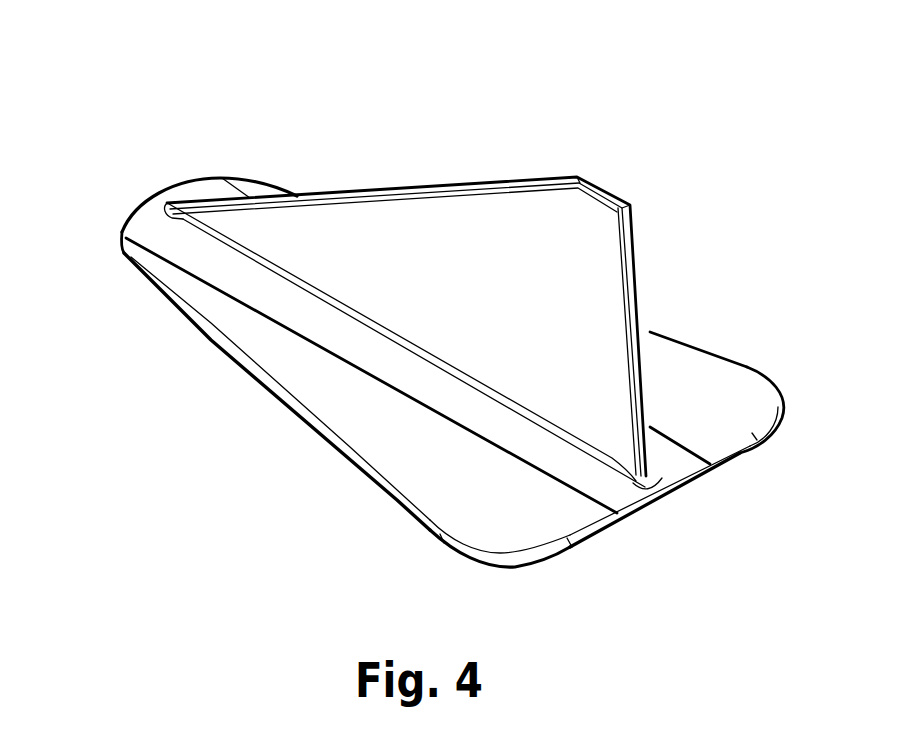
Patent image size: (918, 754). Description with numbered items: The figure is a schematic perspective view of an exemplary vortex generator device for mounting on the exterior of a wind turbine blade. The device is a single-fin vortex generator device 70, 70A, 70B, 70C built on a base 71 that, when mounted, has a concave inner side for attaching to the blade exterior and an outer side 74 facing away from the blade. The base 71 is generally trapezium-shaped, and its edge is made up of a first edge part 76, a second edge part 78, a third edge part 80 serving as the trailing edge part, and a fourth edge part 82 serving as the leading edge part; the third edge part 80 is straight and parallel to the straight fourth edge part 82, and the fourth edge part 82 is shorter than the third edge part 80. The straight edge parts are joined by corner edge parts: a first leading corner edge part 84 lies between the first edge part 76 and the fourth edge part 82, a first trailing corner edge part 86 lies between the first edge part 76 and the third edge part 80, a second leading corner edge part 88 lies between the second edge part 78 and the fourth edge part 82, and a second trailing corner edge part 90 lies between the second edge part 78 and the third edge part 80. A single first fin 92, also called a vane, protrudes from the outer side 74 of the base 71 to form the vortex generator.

The single-fin vortex generator device 70 is at (394, 271).
The single-fin vortex generator device 70A is at (394, 271).
The single-fin vortex generator device 70B is at (394, 271).
The single-fin vortex generator device 70C is at (445, 143).
The base 71 is at (682, 372).
The outer side 74 is at (397, 449).
The first edge part 76 is at (262, 386).
The second edge part 78 is at (650, 333).
The third edge part 80 is at (685, 487).
The fourth edge part 82 is at (162, 198).
The first leading corner edge part 84 is at (122, 246).
The first trailing corner edge part 86 is at (497, 568).
The second leading corner edge part 88 is at (233, 178).
The second trailing corner edge part 90 is at (783, 407).
The first fin 92 is at (568, 222).